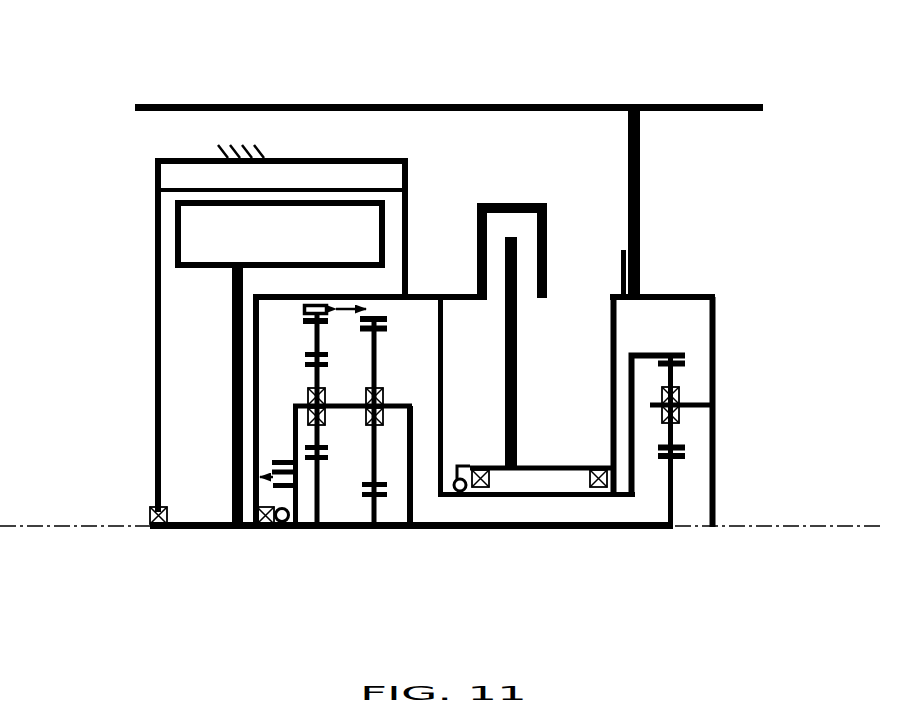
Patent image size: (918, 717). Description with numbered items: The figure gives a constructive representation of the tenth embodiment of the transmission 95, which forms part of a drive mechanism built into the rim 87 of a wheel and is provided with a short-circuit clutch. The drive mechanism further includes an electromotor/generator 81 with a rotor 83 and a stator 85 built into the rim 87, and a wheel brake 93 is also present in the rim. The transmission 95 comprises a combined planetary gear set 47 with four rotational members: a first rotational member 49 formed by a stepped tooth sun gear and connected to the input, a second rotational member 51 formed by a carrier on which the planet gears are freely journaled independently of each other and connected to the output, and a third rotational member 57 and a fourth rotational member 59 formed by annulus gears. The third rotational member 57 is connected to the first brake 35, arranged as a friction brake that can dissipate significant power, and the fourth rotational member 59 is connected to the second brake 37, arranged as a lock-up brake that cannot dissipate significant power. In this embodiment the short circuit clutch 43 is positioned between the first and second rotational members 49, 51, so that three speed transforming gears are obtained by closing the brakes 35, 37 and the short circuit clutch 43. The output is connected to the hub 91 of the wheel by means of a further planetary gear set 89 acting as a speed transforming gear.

The first brake 35 is at (317, 292).
The second brake 37 is at (378, 292).
The short circuit clutch 43 is at (301, 481).
The combined planetary gear set 47 is at (330, 548).
The first rotational member 49 is at (378, 512).
The second rotational member 51 is at (293, 407).
The third rotational member 57 is at (317, 341).
The fourth rotational member 59 is at (387, 321).
The electromotor/generator 81 is at (143, 200).
The rotor 83 is at (207, 232).
The stator 85 is at (285, 178).
The rim 87 is at (652, 103).
The further planetary gear set 89 is at (691, 347).
The hub 91 is at (640, 201).
The wheel brake 93 is at (511, 196).
The transmission 95 is at (265, 536).